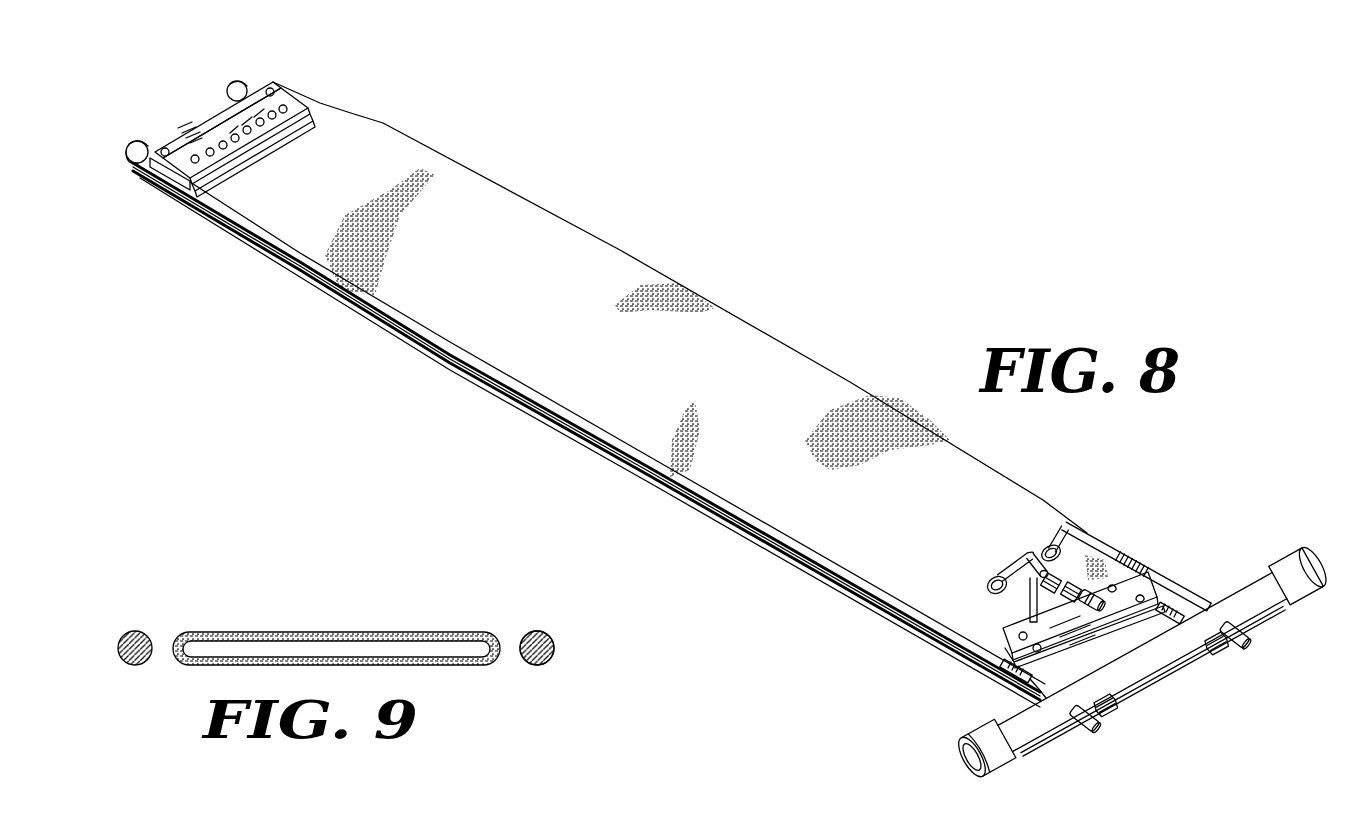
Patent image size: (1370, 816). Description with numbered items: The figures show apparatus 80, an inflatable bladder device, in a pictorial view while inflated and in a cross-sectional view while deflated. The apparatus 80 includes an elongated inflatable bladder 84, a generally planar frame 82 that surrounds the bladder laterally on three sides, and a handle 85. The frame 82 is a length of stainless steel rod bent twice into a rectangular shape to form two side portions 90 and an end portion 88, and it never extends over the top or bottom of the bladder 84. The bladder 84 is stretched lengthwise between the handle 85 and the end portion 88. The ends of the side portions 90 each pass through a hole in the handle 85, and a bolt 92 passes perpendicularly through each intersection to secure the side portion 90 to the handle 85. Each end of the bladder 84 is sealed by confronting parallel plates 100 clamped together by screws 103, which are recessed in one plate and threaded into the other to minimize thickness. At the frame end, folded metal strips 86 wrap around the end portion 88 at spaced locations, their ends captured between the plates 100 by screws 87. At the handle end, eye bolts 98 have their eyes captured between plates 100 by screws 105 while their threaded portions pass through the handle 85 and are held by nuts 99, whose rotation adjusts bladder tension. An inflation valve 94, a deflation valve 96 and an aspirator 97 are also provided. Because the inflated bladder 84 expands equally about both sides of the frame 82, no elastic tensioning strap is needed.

In FIG. 8, the apparatus 80 is at (834, 314).
In FIG. 9, the apparatus 80 is at (387, 602).
In FIG. 8, the frame 82 is at (638, 472).
In FIG. 9, the frame 82 is at (560, 637).
In FIG. 8, the inflatable bladder 84 is at (977, 462).
In FIG. 9, the inflatable bladder 84 is at (288, 633).
In FIG. 8, the handle 85 is at (1148, 683).
In FIG. 8, the folded metal strips 86 is at (241, 83).
In FIG. 8, the screws 87 is at (296, 84).
In FIG. 8, the end portion 88 is at (196, 112).
In FIG. 8, the side portions 90 is at (790, 547).
In FIG. 9, the side portions 90 is at (118, 645).
In FIG. 8, the bolt 92 is at (1048, 691).
In FIG. 8, the inflation valve 94 is at (1089, 533).
In FIG. 8, the deflation valve 96 is at (1016, 565).
In FIG. 8, the aspirator 97 is at (988, 581).
In FIG. 8, the eye bolts 98 is at (1170, 593).
In FIG. 8, the nuts 99 is at (1212, 651).
In FIG. 8, the plates 100 is at (158, 178).
In FIG. 8, the screws 103 is at (263, 134).
In FIG. 8, the screws 105 is at (974, 652).